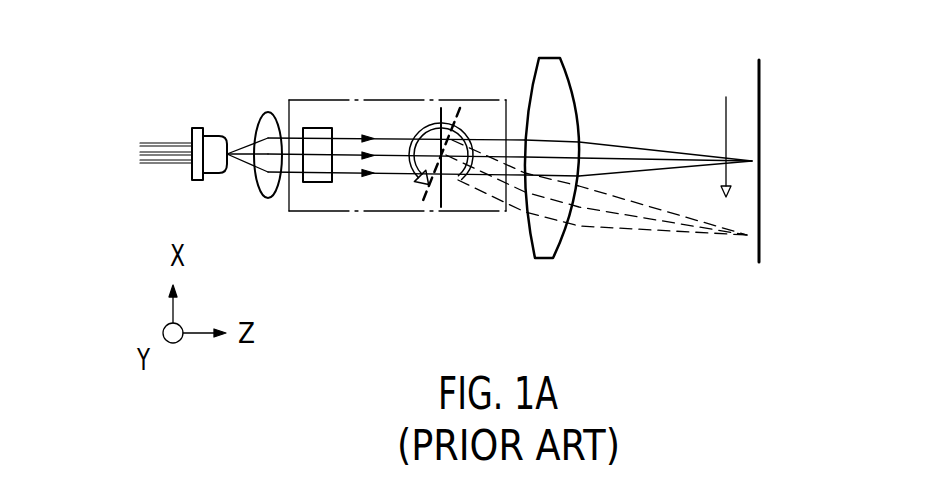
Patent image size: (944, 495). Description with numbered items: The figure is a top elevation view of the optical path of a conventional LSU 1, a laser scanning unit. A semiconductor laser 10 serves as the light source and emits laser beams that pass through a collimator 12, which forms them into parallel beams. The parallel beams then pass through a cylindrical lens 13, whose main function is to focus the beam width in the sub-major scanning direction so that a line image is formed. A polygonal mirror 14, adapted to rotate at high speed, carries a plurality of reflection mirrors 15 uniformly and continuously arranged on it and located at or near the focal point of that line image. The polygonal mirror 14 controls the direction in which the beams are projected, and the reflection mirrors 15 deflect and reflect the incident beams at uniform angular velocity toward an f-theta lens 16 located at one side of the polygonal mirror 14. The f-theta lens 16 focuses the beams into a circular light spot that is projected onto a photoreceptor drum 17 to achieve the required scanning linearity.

The LSU 1 is at (152, 87).
The semiconductor laser 10 is at (217, 162).
The collimator 12 is at (268, 125).
The cylindrical lens 13 is at (320, 133).
The polygonal mirror 14 is at (440, 120).
The reflection mirror 15 is at (441, 155).
The f-theta lens 16 is at (552, 98).
The photoreceptor drum 17 is at (760, 137).